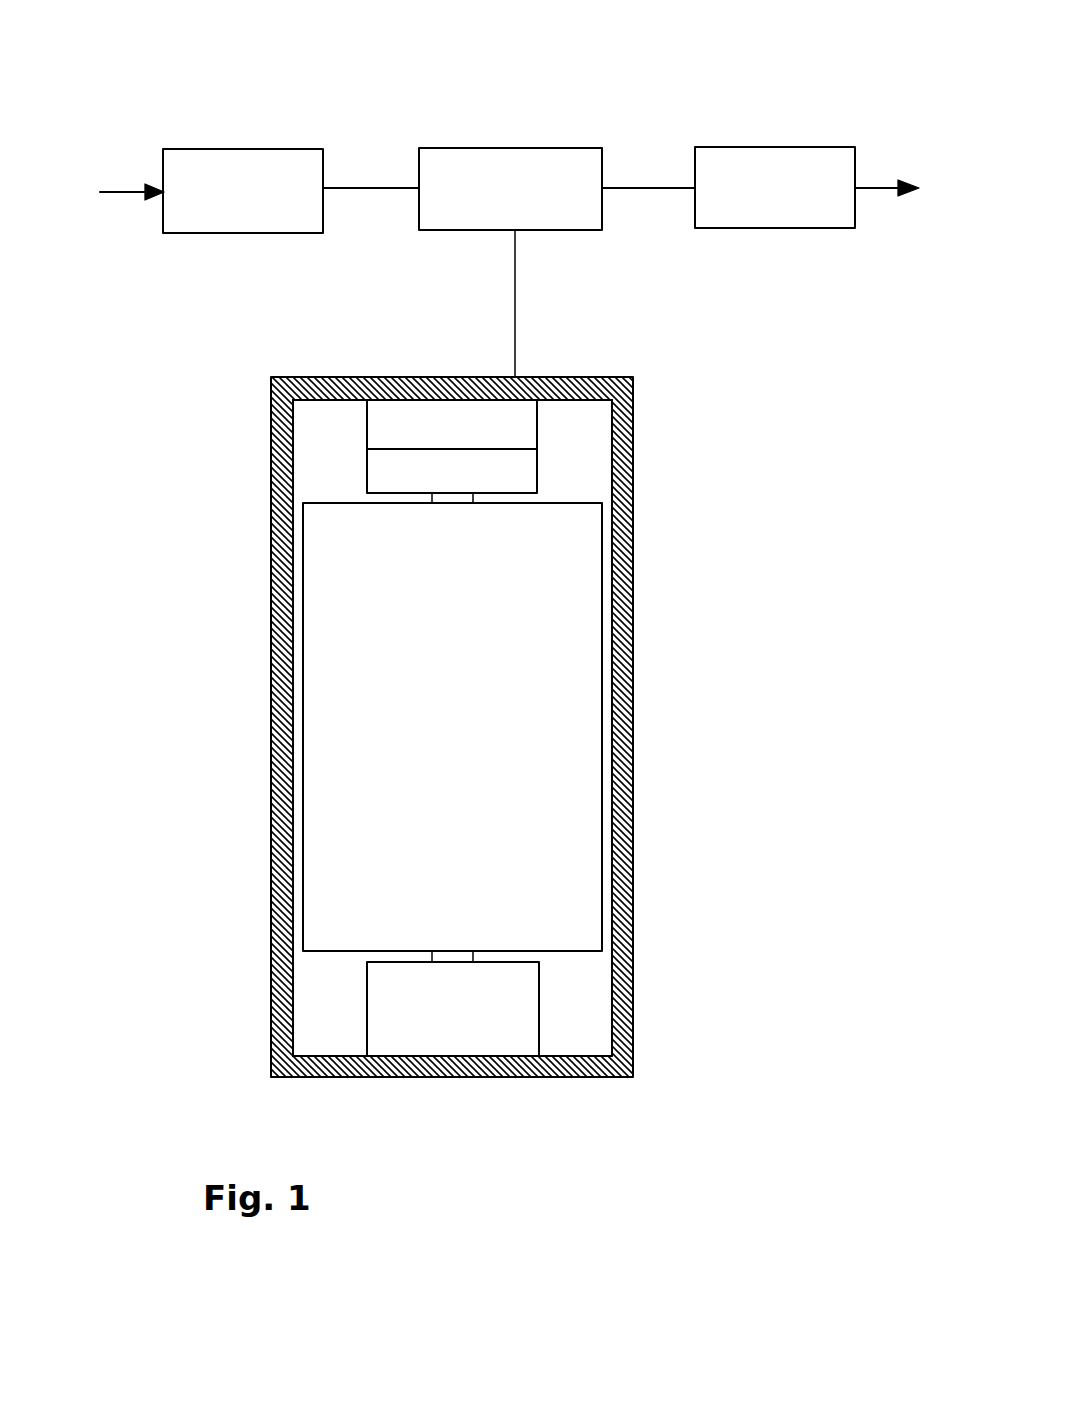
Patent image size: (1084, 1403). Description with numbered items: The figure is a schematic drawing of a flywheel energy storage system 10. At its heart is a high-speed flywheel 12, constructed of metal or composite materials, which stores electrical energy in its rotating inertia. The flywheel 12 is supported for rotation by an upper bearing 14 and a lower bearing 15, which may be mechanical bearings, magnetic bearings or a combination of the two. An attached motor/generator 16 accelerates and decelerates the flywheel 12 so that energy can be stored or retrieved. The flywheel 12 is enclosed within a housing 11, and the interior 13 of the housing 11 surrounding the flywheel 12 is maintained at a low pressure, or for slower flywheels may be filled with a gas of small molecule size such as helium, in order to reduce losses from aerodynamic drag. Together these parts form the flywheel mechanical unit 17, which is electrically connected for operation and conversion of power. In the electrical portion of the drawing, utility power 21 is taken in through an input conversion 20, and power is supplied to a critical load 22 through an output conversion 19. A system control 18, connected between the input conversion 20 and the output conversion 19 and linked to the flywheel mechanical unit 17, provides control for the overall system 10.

The system 10 is at (271, 72).
The housing 11 is at (635, 455).
The high-speed flywheel 12 is at (578, 501).
The interior 13 is at (585, 988).
The upper bearing 14 is at (367, 479).
The lower bearing 15 is at (367, 1003).
The motor/generator 16 is at (366, 430).
The flywheel mechanical unit 17 is at (605, 352).
The system control 18 is at (518, 147).
The output conversion 19 is at (766, 147).
The input conversion 20 is at (244, 148).
The utility power 21 is at (123, 196).
The critical load 22 is at (880, 190).